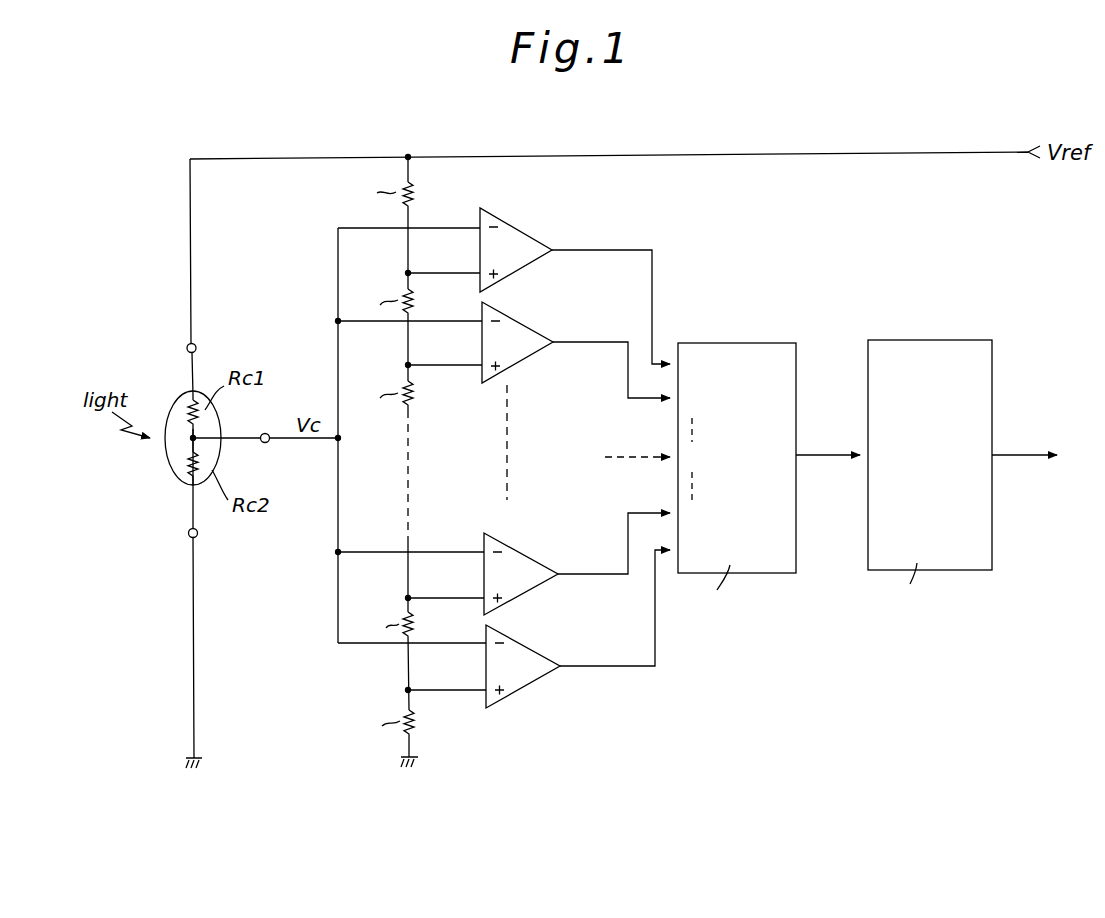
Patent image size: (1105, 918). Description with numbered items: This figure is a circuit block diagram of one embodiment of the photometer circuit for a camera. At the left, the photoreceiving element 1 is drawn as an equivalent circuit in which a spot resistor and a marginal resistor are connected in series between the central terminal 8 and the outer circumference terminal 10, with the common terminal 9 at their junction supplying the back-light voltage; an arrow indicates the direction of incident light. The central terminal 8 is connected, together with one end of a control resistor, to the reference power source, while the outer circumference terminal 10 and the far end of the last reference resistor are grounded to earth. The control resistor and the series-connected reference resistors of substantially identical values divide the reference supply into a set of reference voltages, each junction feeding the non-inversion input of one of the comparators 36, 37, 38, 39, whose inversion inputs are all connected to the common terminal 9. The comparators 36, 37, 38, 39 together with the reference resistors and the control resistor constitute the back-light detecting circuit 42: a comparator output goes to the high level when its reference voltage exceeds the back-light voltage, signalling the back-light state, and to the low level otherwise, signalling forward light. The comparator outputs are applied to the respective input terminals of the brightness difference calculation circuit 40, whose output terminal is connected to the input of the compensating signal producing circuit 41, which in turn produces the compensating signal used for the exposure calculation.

The photoreceiving element 1 is at (168, 468).
The central terminal 8 is at (197, 348).
The common terminal 9 is at (268, 443).
The outer circumference terminal 10 is at (188, 535).
The first comparator 36 is at (526, 233).
The second comparator 37 is at (528, 326).
The (n-1)th comparator 38 is at (536, 560).
The nth comparator 39 is at (538, 652).
The brightness difference calculation circuit 40 is at (742, 343).
The compensating signal producing circuit 41 is at (950, 340).
The back-light detecting circuit 42 is at (471, 447).